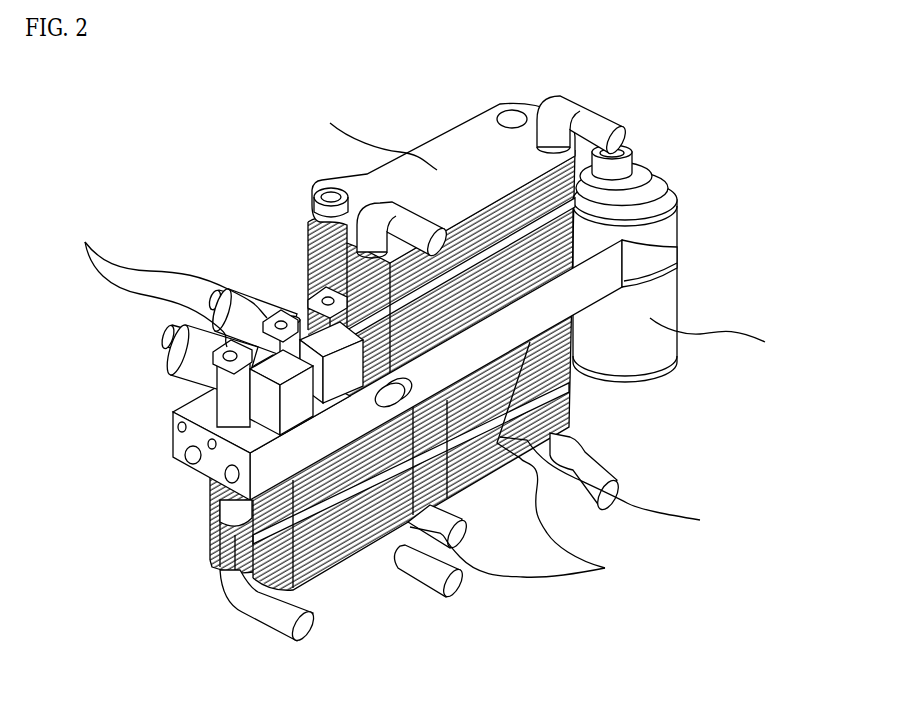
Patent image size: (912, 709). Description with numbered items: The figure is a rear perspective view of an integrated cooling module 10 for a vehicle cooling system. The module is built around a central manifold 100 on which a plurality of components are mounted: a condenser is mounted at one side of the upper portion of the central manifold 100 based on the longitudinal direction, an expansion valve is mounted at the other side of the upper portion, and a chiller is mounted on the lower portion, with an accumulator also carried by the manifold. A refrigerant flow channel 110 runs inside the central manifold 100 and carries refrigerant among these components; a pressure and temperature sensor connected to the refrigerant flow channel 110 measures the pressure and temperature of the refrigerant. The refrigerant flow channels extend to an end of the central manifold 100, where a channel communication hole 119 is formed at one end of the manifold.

The integrated cooling module 10 is at (203, 98).
The central manifold 100 is at (517, 328).
The refrigerant flow channel 110 is at (195, 440).
The channel communication hole 119 is at (175, 447).